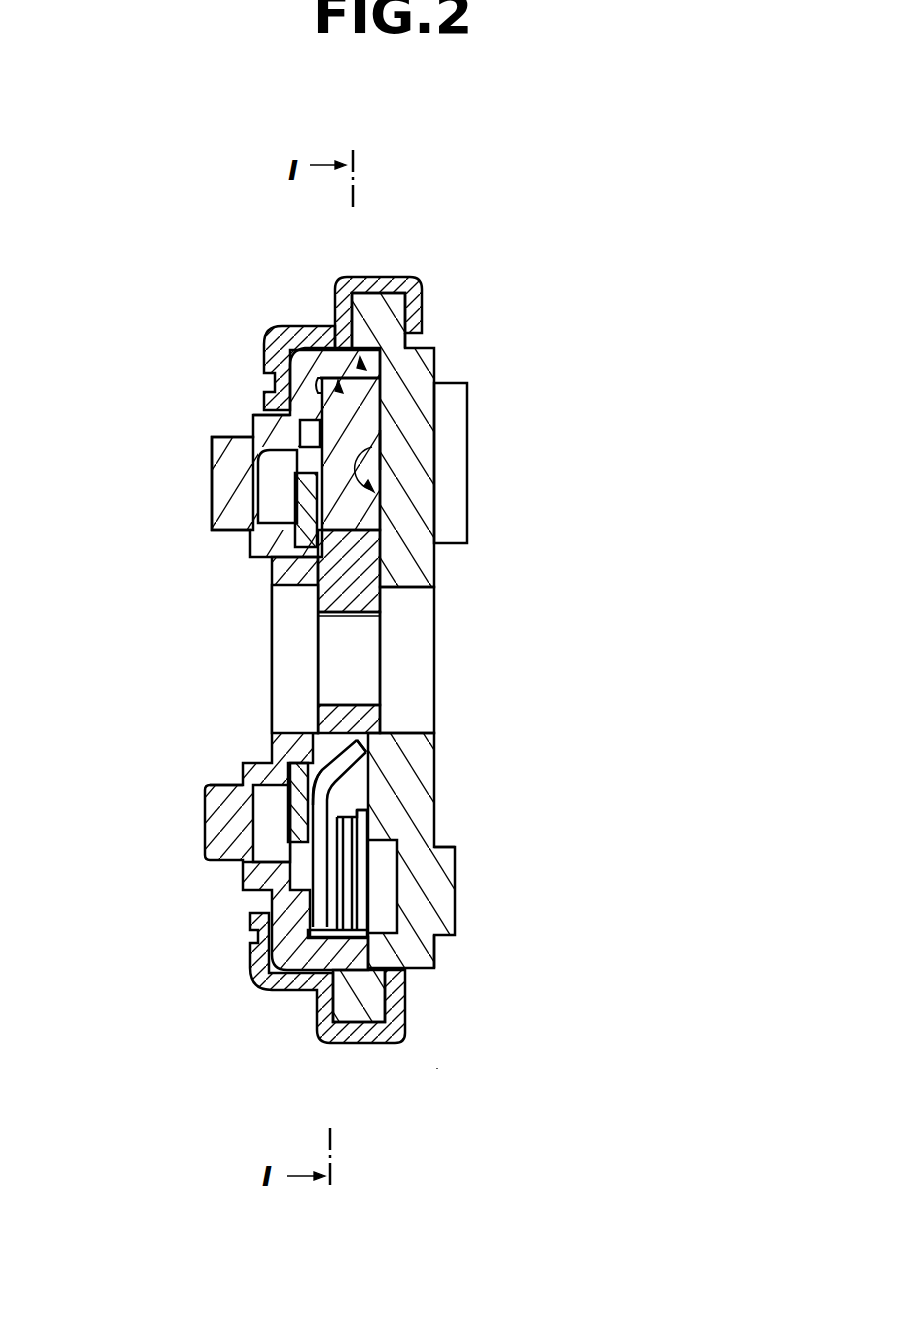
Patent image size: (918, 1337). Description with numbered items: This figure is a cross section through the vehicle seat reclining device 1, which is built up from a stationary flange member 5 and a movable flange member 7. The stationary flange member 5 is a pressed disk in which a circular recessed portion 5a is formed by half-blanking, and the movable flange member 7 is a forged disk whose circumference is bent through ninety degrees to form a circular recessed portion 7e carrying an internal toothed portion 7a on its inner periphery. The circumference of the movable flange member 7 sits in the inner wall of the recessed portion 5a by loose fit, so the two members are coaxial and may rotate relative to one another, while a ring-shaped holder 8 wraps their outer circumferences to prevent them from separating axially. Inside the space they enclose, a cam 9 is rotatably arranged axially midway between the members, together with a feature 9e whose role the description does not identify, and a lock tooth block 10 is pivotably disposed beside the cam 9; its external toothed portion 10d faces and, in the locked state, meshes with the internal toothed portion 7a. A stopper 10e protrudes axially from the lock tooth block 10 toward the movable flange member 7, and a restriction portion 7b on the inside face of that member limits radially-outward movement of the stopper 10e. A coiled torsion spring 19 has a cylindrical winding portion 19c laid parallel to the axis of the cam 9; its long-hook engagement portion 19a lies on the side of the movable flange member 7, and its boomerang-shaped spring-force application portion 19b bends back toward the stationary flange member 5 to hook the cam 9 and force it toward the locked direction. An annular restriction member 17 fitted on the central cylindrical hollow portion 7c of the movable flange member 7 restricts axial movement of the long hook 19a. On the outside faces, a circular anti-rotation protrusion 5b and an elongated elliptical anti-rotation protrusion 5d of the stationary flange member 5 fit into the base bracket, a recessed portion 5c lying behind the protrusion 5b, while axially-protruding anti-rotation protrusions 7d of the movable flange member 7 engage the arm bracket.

The vehicle seat reclining device 1 is at (440, 1075).
The stationary flange member 5 is at (390, 310).
The circular recessed portion 5a is at (384, 450).
The anti-rotation protrusion 5b is at (390, 897).
The recessed portion 5c is at (438, 935).
The anti-rotation protrusion 5d is at (456, 493).
The movable flange member 7 is at (300, 358).
The internal toothed portion 7a is at (282, 410).
The restriction portion 7b is at (294, 862).
The cylindrical hollow portion 7c is at (280, 732).
The anti-rotation protrusions 7d is at (212, 785).
The circular recessed portion 7e is at (405, 970).
The ring-shaped holder 8 is at (393, 277).
The cam 9 is at (437, 631).
The groove of shaft 9e is at (355, 662).
The lock tooth block 10 is at (365, 400).
The external toothed portion 10d is at (403, 340).
The stopper 10e is at (220, 500).
The annular restriction member 17 is at (294, 805).
The coiled torsion spring 19 is at (345, 835).
The engagement portion 19a is at (328, 788).
The spring-force application portion 19b is at (352, 742).
The winding portion 19c is at (362, 848).